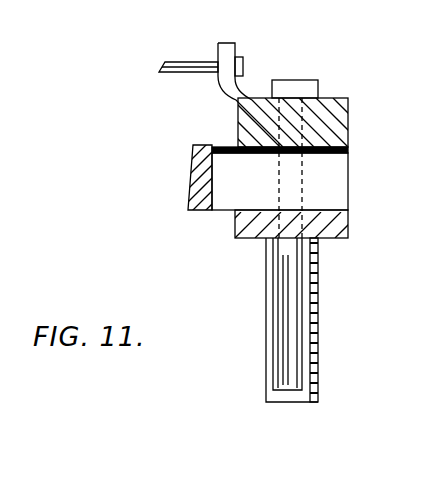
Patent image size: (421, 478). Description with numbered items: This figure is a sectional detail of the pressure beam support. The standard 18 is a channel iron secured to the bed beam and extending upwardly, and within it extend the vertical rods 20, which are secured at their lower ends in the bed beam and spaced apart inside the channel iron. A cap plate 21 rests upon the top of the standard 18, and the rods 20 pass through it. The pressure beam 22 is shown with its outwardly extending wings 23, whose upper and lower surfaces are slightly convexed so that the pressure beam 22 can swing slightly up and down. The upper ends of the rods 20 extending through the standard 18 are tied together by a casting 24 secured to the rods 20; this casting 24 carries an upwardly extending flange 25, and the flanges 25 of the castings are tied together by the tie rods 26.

The standard 18 is at (315, 345).
The vertical rods 20 is at (295, 320).
The cap plate 21 is at (346, 223).
The pressure beam 22 is at (190, 181).
The wings 23 is at (330, 190).
The casting 24 is at (238, 117).
The flanges 25 is at (236, 43).
The tie rods 26 is at (185, 63).